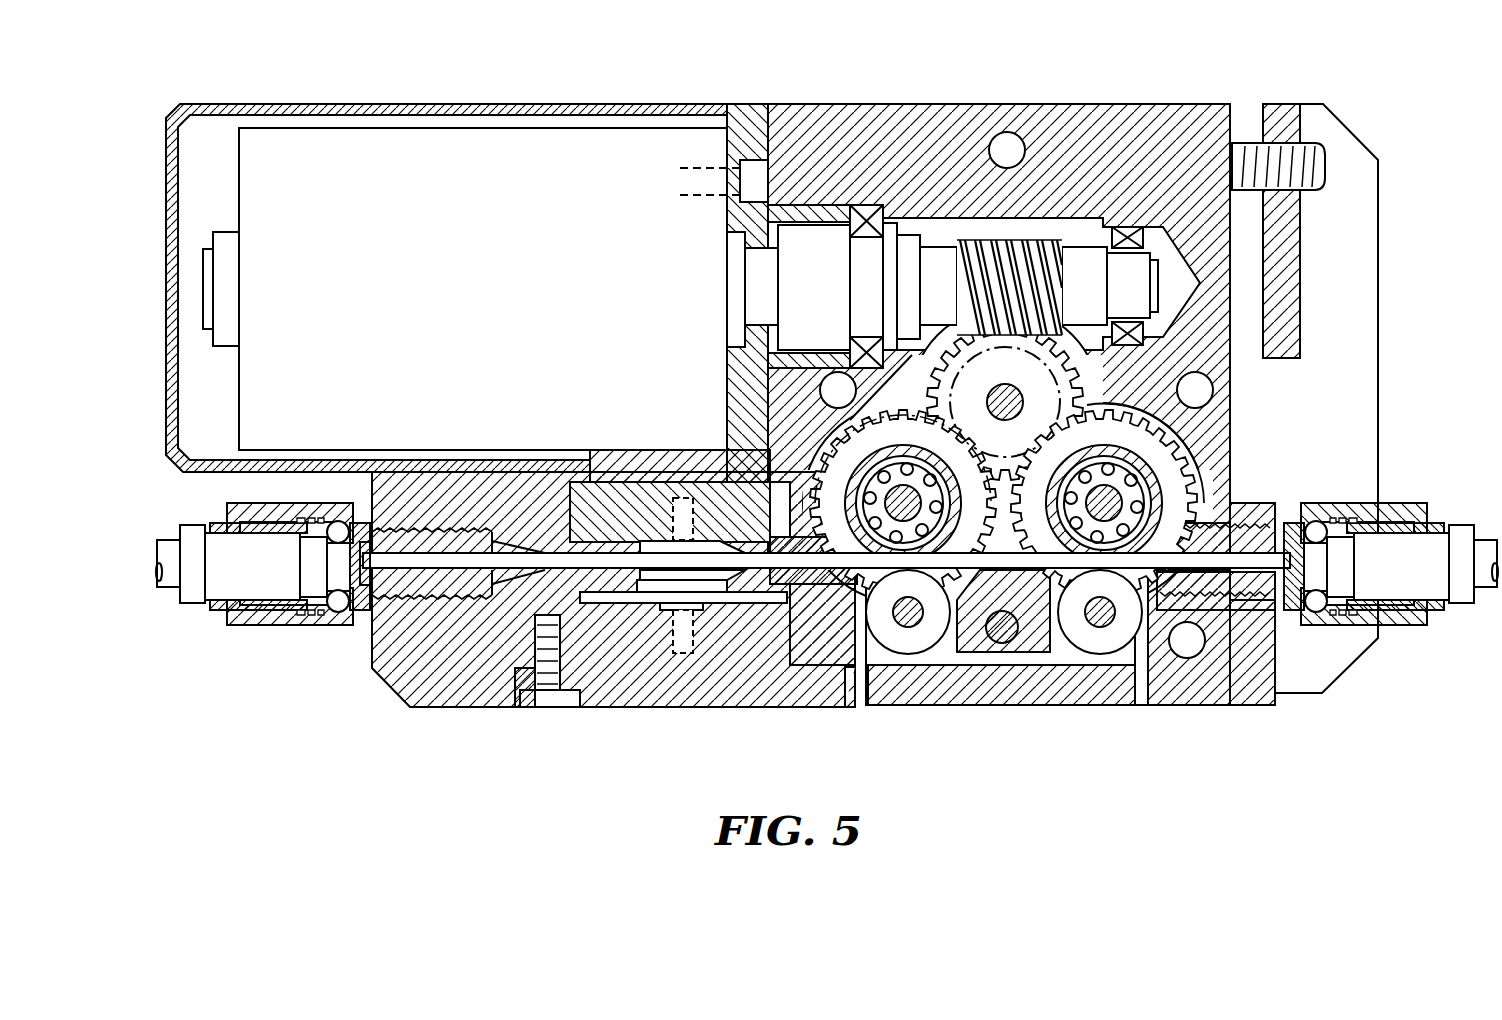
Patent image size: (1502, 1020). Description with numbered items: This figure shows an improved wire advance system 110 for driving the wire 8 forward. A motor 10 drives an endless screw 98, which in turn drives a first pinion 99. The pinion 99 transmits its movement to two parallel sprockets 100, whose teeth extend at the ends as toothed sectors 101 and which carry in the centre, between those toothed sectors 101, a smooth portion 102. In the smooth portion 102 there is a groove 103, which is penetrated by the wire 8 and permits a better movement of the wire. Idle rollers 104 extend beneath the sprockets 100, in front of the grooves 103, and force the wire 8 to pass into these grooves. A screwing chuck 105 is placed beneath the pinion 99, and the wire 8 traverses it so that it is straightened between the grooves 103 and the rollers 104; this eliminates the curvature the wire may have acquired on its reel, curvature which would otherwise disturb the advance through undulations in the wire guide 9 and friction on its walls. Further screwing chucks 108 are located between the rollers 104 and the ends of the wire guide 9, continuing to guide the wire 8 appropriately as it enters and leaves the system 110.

The wire 8 is at (1247, 568).
The wire guide 9 is at (173, 576).
The motor 10 is at (482, 148).
The endless screw 98 is at (1046, 247).
The first pinion 99 is at (1090, 378).
The sprockets 100 is at (1210, 487).
The toothed sectors 101 is at (822, 486).
The smooth portion 102 is at (1150, 488).
The groove 103 is at (1180, 432).
The idle rollers 104 is at (902, 650).
The screwing chuck 105 is at (1025, 650).
The screwing chucks 108 is at (218, 578).
The wire advance system 110 is at (1188, 729).